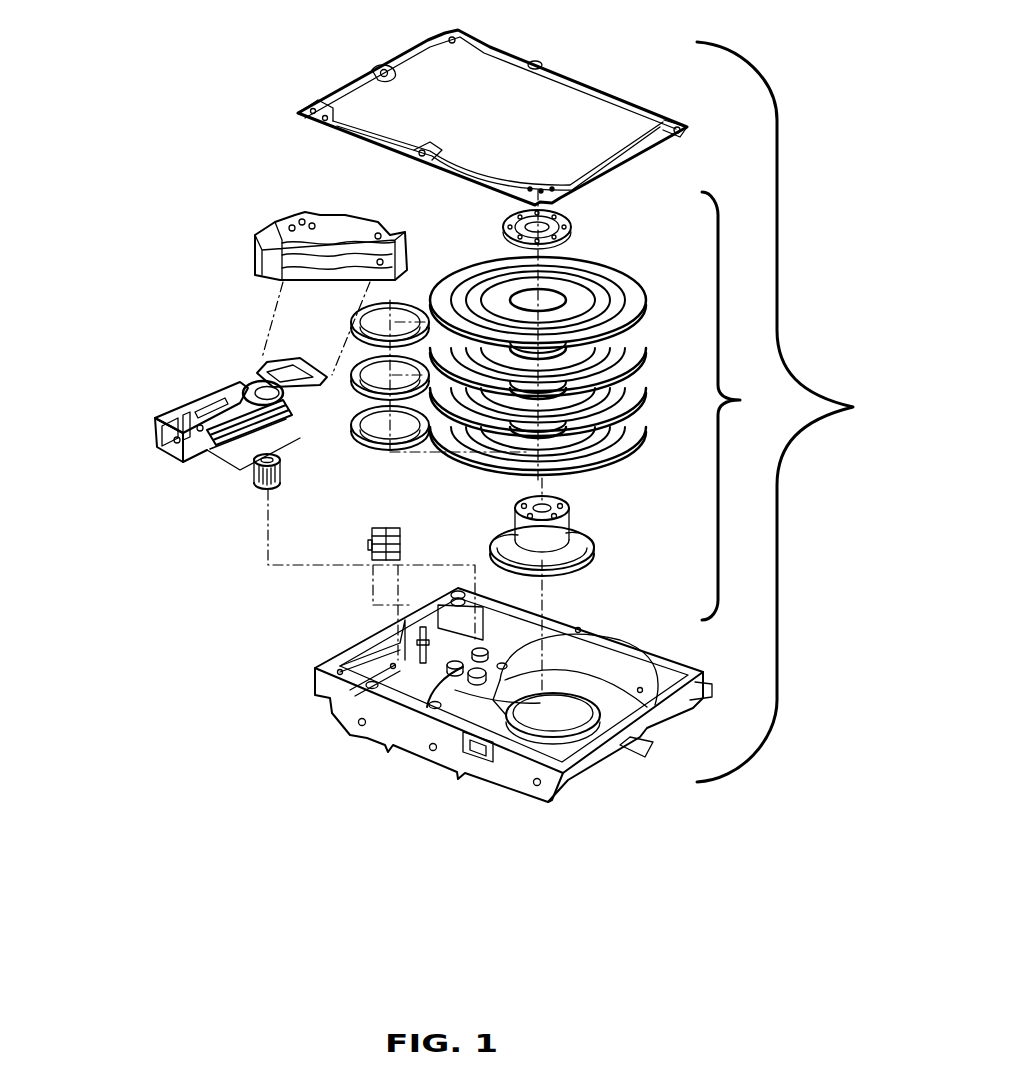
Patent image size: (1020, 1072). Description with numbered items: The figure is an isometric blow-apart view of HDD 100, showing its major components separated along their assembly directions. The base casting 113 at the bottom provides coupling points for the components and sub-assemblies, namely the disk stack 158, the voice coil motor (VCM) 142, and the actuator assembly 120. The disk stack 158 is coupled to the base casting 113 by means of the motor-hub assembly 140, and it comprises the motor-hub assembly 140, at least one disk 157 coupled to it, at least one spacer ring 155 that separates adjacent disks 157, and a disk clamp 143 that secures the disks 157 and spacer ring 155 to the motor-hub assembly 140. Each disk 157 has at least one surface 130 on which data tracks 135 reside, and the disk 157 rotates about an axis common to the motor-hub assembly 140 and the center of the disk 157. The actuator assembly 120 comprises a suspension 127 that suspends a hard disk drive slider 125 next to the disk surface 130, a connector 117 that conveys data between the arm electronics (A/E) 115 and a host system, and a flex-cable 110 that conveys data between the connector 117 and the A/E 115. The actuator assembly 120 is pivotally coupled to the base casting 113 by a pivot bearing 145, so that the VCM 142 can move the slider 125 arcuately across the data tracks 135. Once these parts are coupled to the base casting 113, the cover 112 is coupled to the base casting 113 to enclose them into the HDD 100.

The HDD 100 is at (856, 392).
The cover 112 is at (580, 127).
The base casting 113 is at (330, 690).
The disk clamp 143 is at (480, 224).
The disk surface 130 is at (564, 384).
The data tracks 135 is at (490, 275).
The disk 157 is at (640, 320).
The disk stack 158 is at (743, 406).
The spacer ring 155 is at (352, 388).
The motor-hub assembly 140 is at (585, 548).
The voice coil motor (VCM) 142 is at (257, 218).
The actuator assembly 120 is at (190, 472).
The hard disk drive slider 125 is at (218, 462).
The flex-cable 110 is at (205, 392).
The connector 117 is at (190, 405).
The arm electronics (A/E) 115 is at (230, 380).
The suspension 127 is at (233, 467).
The pivot bearing 145 is at (262, 493).